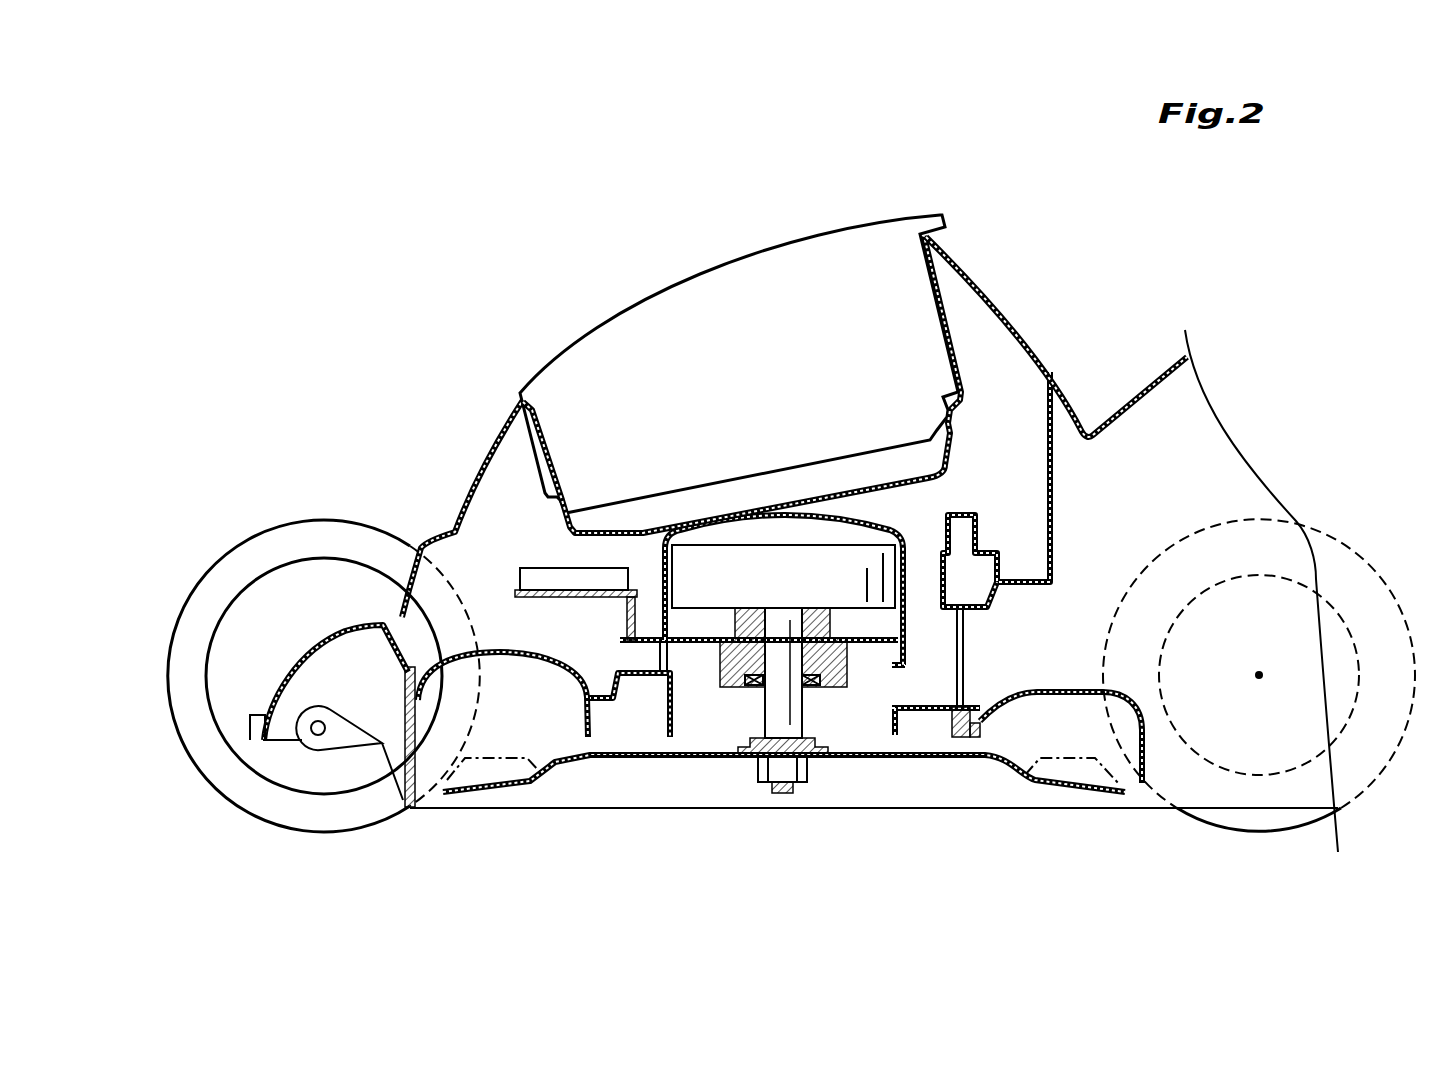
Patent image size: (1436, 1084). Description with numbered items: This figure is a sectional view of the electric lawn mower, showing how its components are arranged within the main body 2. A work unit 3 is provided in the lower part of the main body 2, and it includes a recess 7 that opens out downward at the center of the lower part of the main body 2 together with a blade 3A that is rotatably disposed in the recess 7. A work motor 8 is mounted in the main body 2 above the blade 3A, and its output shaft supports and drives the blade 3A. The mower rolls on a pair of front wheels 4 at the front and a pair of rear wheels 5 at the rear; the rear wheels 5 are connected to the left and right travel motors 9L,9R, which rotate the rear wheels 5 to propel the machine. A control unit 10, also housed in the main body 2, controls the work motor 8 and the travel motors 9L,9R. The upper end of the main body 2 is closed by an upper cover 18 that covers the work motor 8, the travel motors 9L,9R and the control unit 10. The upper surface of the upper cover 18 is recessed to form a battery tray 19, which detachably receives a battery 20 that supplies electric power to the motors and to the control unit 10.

The main body 2 is at (327, 635).
The work unit 3 is at (843, 772).
The blade 3A is at (652, 757).
The front wheels 4 is at (263, 802).
The rear wheels 5 is at (1251, 816).
The recess 7 is at (507, 658).
The work motor 8 is at (887, 590).
The travel motors 9L,9R is at (1292, 579).
The control unit 10 is at (538, 570).
The upper cover 18 is at (1010, 313).
The battery tray 19 is at (942, 288).
The battery 20 is at (600, 347).